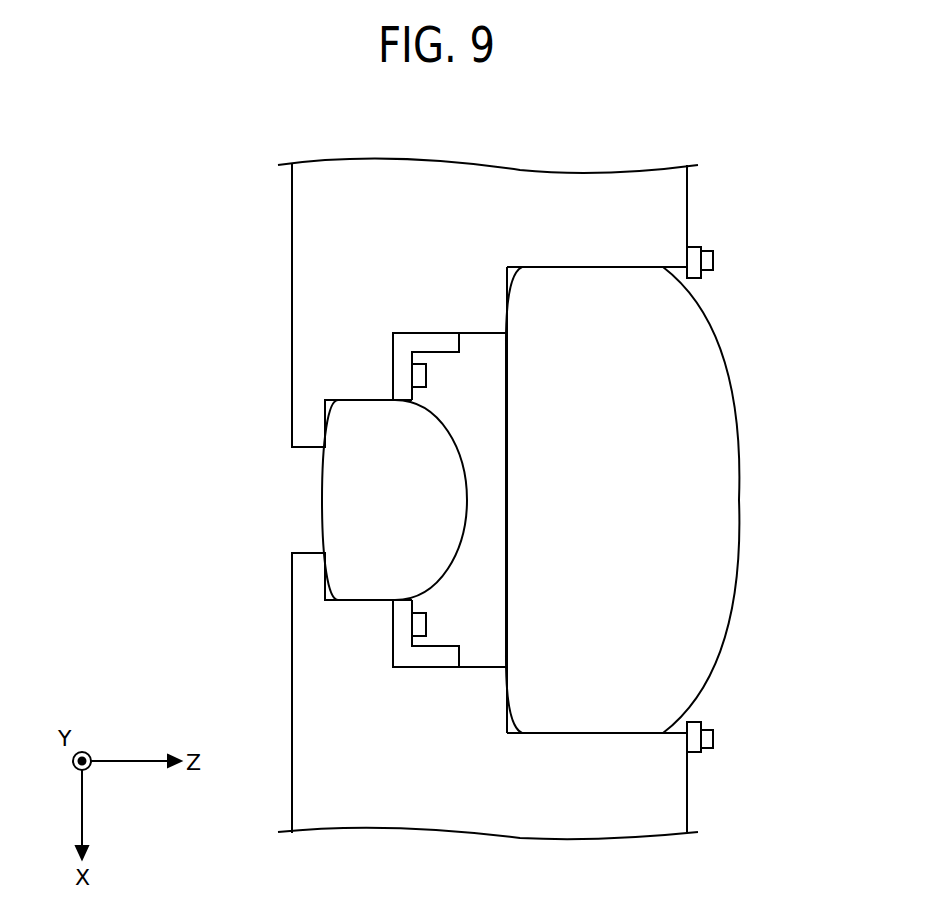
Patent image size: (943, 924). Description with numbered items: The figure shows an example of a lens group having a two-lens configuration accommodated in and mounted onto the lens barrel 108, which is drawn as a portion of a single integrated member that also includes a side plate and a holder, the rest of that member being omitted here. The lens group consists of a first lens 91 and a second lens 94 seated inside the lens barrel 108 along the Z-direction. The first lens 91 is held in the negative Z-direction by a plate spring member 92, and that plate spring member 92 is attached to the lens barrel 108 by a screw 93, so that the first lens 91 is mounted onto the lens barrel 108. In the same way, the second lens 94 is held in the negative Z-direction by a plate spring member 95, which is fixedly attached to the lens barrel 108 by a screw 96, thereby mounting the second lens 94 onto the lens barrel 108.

The lens barrel 108 is at (312, 227).
The first lens 91 is at (345, 500).
The plate spring member 92 is at (413, 342).
The screw 93 is at (420, 375).
The second lens 94 is at (713, 500).
The plate spring member 95 is at (694, 252).
The screw 96 is at (706, 259).